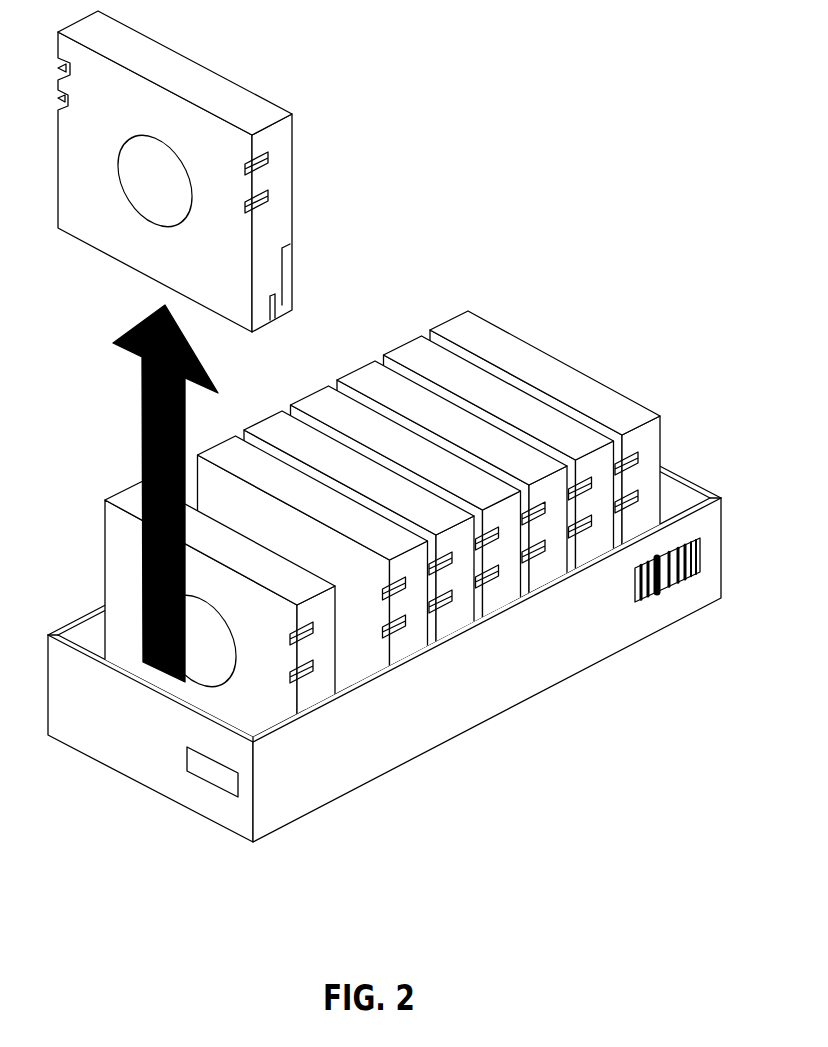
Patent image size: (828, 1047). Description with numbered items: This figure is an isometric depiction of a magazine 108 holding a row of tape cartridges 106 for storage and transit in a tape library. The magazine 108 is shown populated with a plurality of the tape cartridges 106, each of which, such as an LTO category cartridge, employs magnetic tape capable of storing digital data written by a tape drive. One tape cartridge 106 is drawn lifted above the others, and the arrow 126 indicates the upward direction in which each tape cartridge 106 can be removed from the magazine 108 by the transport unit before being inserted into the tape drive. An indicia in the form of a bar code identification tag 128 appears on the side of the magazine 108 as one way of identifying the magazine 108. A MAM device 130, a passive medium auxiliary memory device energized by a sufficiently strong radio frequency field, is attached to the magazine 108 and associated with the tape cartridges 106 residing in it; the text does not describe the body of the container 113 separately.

The tape cartridge 106 is at (293, 229).
The magazine 108 is at (562, 103).
The cartridge container 113 is at (533, 695).
The arrow 126 is at (142, 463).
The bar code identification tag 128 is at (648, 620).
The MAM device 130 is at (217, 787).